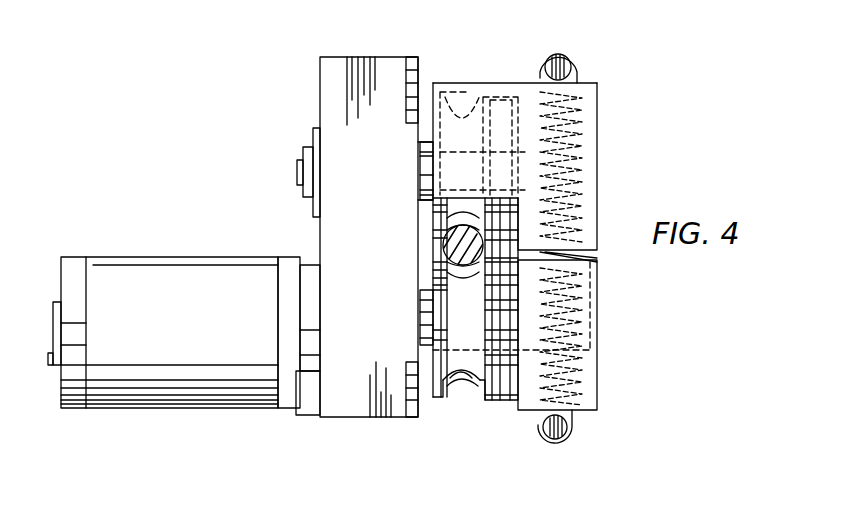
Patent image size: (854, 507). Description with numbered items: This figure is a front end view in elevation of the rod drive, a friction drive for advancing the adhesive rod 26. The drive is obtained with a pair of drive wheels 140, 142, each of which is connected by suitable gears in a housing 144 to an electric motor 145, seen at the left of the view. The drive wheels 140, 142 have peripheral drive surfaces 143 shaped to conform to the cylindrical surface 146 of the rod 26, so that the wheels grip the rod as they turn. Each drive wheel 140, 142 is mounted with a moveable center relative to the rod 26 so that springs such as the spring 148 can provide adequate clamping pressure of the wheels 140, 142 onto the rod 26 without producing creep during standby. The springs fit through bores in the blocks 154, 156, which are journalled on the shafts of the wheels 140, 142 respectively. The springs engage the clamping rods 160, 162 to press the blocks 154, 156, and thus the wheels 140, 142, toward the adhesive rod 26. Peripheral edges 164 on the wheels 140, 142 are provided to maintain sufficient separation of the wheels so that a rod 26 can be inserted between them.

The rod 26 is at (445, 250).
The drive wheel 140 is at (481, 96).
The drive wheel 142 is at (458, 382).
The peripheral drive surfaces 143 is at (455, 95).
The housing 144 is at (362, 417).
The electric motor 145 is at (218, 257).
The cylindrical surface 146 is at (433, 222).
The spring 148 is at (604, 375).
The block 154 is at (598, 128).
The block 156 is at (598, 290).
The clamping rod 160 is at (572, 62).
The clamping rod 162 is at (577, 433).
The peripheral edges 164 is at (437, 134).